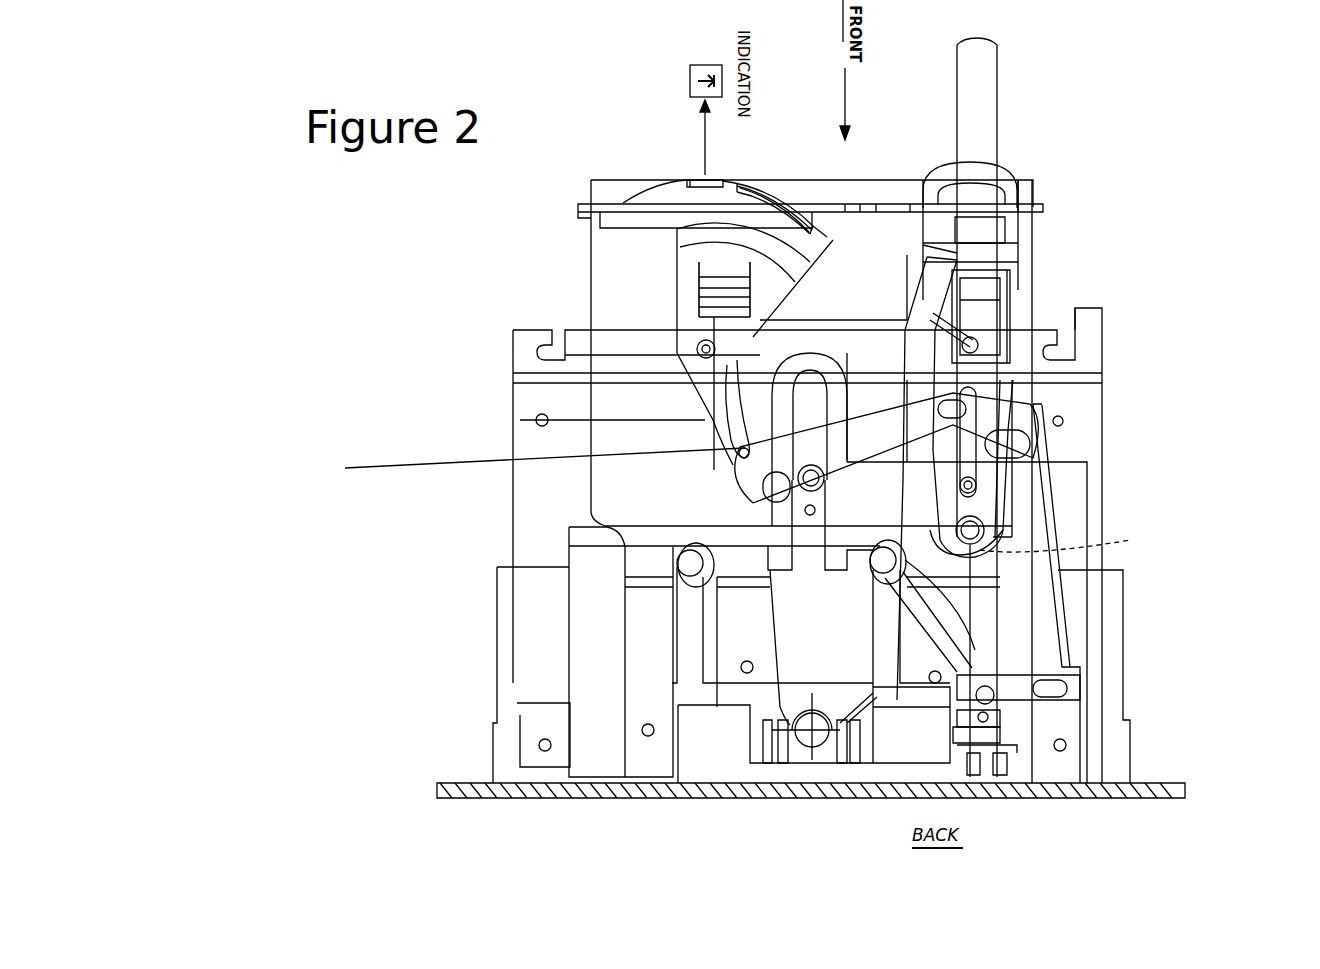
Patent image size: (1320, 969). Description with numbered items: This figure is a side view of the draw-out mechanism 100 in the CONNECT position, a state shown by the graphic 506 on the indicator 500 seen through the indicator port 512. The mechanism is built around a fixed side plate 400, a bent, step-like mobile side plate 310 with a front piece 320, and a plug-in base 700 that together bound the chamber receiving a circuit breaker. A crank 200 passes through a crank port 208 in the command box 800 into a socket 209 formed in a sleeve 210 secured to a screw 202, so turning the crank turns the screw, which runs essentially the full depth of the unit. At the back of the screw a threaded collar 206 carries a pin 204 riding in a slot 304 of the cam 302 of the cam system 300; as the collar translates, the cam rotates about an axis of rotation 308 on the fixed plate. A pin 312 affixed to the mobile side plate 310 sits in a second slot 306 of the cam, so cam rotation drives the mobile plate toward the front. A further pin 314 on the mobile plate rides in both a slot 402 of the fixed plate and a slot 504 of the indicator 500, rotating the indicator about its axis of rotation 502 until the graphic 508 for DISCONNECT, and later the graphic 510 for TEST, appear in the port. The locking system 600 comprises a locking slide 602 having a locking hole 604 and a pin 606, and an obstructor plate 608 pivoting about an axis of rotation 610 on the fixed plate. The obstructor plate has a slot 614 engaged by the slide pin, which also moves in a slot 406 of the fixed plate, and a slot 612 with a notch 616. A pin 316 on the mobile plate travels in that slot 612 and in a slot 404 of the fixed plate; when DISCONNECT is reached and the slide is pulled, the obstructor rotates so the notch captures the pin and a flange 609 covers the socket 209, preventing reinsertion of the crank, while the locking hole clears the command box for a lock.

The draw-out mechanism 100 is at (583, 55).
The crank 200 is at (982, 97).
The screw 202 is at (1060, 613).
The pin 204 is at (1090, 663).
The threaded collar 206 is at (1020, 657).
The crank port 208 is at (965, 160).
The socket 209 is at (1030, 290).
The sleeve 210 is at (1008, 497).
The cam system 300 is at (846, 306).
The cam 302 is at (758, 717).
The slot 304 is at (1047, 700).
The slot 306 is at (745, 480).
The axis of rotation 308 is at (817, 747).
The mobile side plate 310 is at (513, 362).
The pin 312 is at (855, 485).
The pin 314 is at (525, 462).
The pin 316 is at (1061, 483).
The front piece 320 is at (1085, 372).
The fixed side plate 400 is at (615, 289).
The slot 402 is at (752, 365).
The slot 404 is at (1062, 487).
The slot 406 is at (1020, 270).
The indicator 500 is at (688, 257).
The axis of rotation 502 is at (513, 354).
The slot 504 is at (727, 417).
The graphic 506 is at (690, 176).
The graphic 508 is at (755, 204).
The graphic 510 is at (785, 215).
The indicator port 512 is at (694, 176).
The locking system 600 is at (1058, 166).
The locking slide 602 is at (945, 165).
The locking hole 604 is at (1005, 175).
The pin 606 is at (905, 350).
The obstructor plate 608 is at (1012, 310).
The flange 609 is at (923, 250).
The axis of rotation 610 is at (1073, 543).
The slot 612 is at (1058, 442).
The slot 614 is at (925, 285).
The notch 616 is at (935, 426).
The plug-in base 700 is at (497, 620).
The command box 800 is at (613, 180).